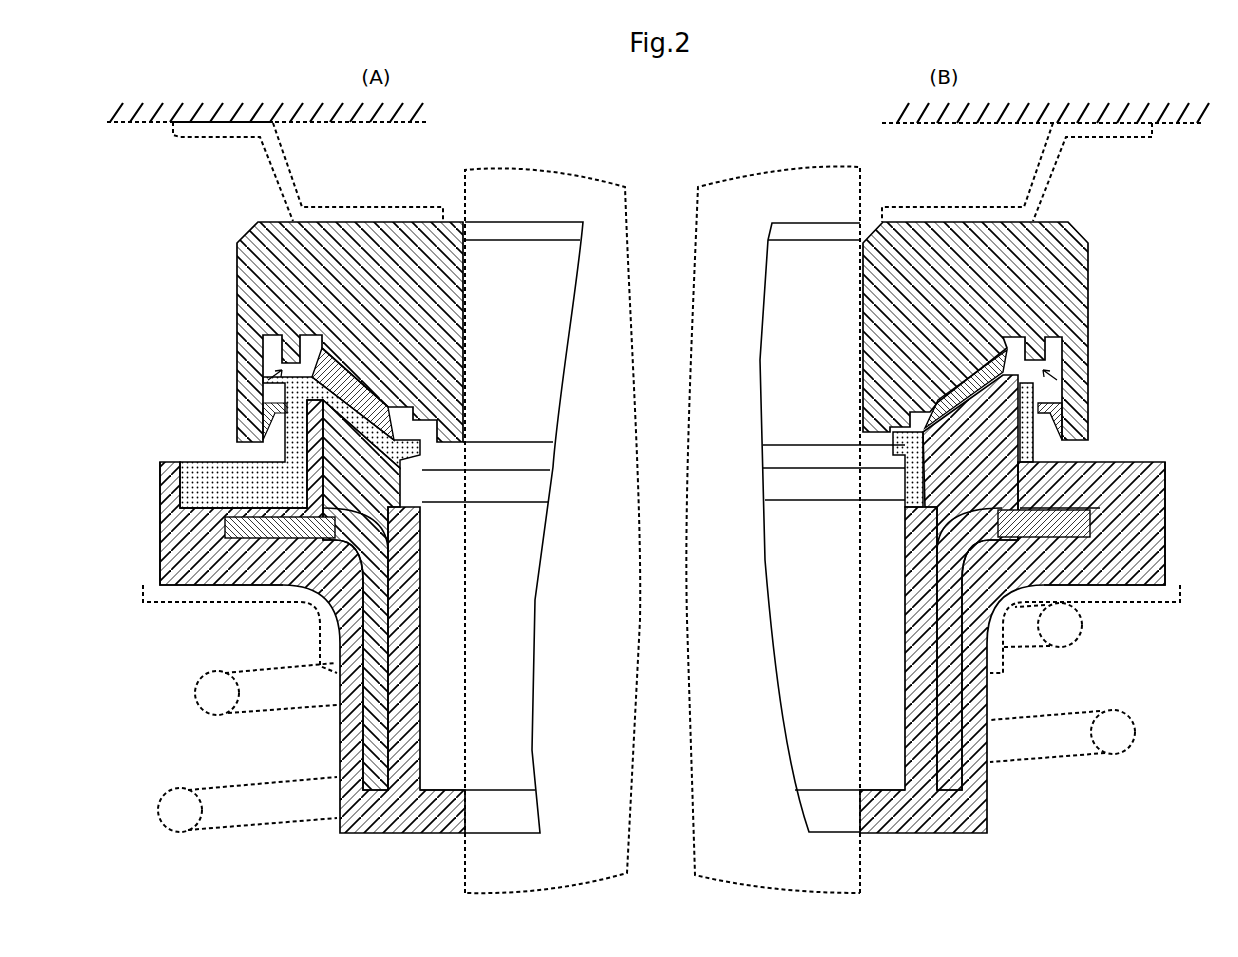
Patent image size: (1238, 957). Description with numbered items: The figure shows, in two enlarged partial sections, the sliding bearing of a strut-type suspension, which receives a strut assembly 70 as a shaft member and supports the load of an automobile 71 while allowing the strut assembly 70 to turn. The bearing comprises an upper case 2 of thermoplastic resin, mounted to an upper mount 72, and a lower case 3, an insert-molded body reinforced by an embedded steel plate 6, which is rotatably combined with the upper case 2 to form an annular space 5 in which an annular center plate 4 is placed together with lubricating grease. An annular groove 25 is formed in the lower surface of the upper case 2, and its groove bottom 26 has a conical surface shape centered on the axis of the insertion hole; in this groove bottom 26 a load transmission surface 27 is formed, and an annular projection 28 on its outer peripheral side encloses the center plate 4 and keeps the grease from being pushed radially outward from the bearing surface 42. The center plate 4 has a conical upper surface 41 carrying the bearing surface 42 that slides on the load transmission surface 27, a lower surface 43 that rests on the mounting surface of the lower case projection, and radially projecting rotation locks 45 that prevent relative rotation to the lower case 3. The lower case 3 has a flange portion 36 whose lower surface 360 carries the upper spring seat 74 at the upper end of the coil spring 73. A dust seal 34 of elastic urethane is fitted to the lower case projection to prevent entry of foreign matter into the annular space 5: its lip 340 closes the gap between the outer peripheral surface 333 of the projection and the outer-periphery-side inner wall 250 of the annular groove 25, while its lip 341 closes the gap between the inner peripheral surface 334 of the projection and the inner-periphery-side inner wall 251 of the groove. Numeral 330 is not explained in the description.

The upper case 2 is at (401, 222).
The lower case 3 is at (338, 740).
The center plate 4 is at (390, 372).
The annular space 5 is at (268, 383).
The steel plate 6 is at (248, 587).
The annular groove 25 is at (287, 432).
The groove bottom 26 is at (335, 355).
The load transmission surface 27 is at (370, 402).
The annular projection 28 is at (287, 362).
The dust seal 34 is at (185, 458).
The flange portion 36 is at (160, 535).
The upper surface 41 is at (378, 395).
The bearing surface 42 is at (330, 372).
The lower surface 43 is at (313, 560).
The rotation lock 45 is at (320, 400).
The strut assembly 70 is at (463, 866).
The automobile 71 is at (108, 124).
The upper mount 72 is at (176, 138).
The coil spring 73 is at (222, 716).
The upper spring seat 74 is at (148, 604).
The outer-periphery-side inner wall 250 is at (270, 358).
The inner-periphery-side inner wall 251 is at (412, 440).
The seal base portion 330 is at (283, 443).
The outer peripheral surface 333 is at (1042, 445).
The inner peripheral surface 334 is at (420, 482).
The lip 340 is at (268, 412).
The lip 341 is at (465, 452).
The lower surface 360 is at (200, 587).